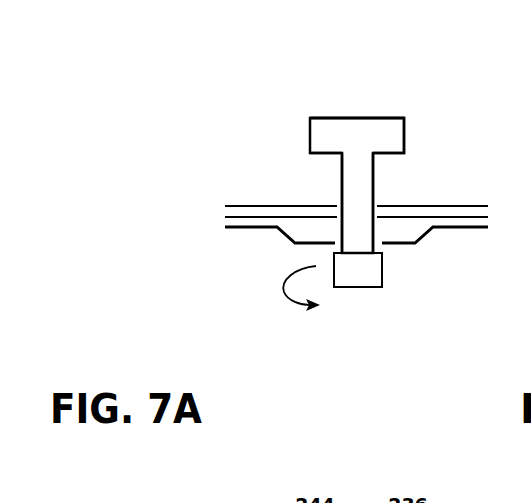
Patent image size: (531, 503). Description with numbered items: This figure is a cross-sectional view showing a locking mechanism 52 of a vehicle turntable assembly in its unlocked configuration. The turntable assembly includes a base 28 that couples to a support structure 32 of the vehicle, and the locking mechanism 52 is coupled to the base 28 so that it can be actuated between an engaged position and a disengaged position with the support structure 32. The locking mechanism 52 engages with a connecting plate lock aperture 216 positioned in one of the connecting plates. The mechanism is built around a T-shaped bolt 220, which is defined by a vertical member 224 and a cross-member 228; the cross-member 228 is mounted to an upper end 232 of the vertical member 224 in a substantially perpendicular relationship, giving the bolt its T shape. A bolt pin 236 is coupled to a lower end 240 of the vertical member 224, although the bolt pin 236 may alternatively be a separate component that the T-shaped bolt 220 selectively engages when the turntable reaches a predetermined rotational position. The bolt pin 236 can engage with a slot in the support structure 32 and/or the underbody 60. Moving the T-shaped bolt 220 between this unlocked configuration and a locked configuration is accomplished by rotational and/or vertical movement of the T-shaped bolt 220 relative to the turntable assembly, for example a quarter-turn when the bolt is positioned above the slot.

The locking mechanism 52 is at (190, 113).
The T-shaped bolt 220 is at (309, 133).
The vertical member 224 is at (340, 190).
The cross-member 228 is at (390, 132).
The upper end 232 is at (357, 158).
The connecting plate lock aperture 216 is at (377, 202).
The base 28 is at (465, 203).
The support structure 32 is at (488, 215).
The underbody 60 is at (473, 225).
The bolt pin 236 is at (357, 275).
The lower end 240 is at (358, 255).